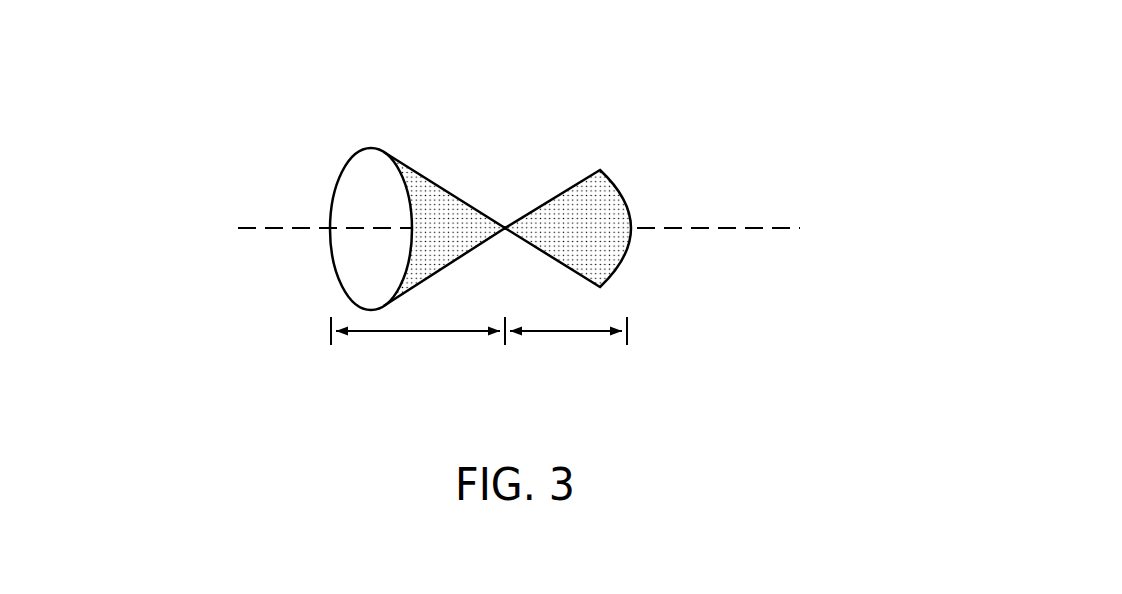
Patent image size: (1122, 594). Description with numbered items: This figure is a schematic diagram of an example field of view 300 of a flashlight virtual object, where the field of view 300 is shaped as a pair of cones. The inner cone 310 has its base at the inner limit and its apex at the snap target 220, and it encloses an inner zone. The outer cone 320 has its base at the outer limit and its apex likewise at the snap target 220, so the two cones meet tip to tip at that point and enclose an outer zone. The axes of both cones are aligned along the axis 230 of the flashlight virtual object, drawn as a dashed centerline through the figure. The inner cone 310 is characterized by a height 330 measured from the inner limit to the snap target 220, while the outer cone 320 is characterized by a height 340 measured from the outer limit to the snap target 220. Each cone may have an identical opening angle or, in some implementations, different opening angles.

The field of view 300 is at (393, 62).
The inner cone 310 is at (410, 165).
The outer cone 320 is at (581, 181).
The snap target 220 is at (505, 225).
The axis 230 is at (697, 227).
The height 330 is at (418, 333).
The height 340 is at (565, 333).